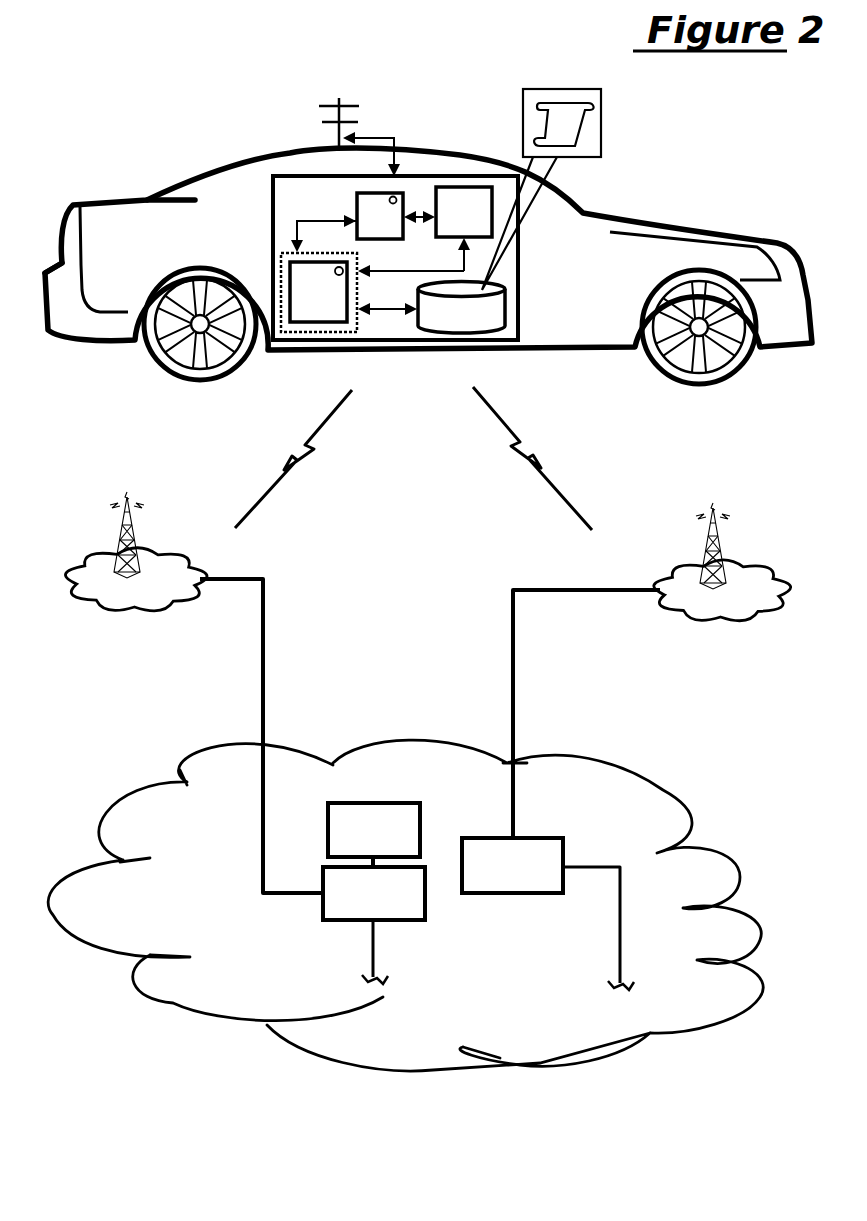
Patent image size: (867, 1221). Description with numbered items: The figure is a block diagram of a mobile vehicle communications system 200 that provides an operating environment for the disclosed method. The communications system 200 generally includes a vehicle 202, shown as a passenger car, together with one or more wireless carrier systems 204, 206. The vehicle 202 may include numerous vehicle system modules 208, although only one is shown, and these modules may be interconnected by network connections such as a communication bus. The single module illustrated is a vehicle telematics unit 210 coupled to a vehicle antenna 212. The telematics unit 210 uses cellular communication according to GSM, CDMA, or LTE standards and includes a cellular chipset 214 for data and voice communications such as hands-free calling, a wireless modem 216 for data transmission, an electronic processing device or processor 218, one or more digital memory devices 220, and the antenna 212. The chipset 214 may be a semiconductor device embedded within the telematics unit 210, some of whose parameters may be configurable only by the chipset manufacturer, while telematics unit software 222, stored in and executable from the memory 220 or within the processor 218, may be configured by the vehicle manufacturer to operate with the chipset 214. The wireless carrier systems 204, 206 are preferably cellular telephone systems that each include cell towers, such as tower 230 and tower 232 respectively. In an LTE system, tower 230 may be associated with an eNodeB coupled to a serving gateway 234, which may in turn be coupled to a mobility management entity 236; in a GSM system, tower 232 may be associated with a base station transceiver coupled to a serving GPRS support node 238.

The mobile vehicle communications system 200 is at (528, 40).
The vehicle 202 is at (594, 209).
The wireless carrier system 204 is at (294, 638).
The wireless carrier system 206 is at (486, 640).
The vehicle system module 208 is at (522, 258).
The vehicle telematics unit 210 is at (518, 293).
The vehicle antenna 212 is at (348, 105).
The cellular chipset 214 is at (380, 216).
The wireless modem 216 is at (464, 212).
The processor 218 is at (319, 292).
The digital memory device 220 is at (461, 308).
The telematics unit software 222 is at (541, 189).
The cell tower 230 is at (140, 553).
The cell tower 232 is at (727, 562).
The serving gateway 234 is at (413, 921).
The mobility management entity 236 is at (340, 803).
The serving GPRS support node 238 is at (533, 838).